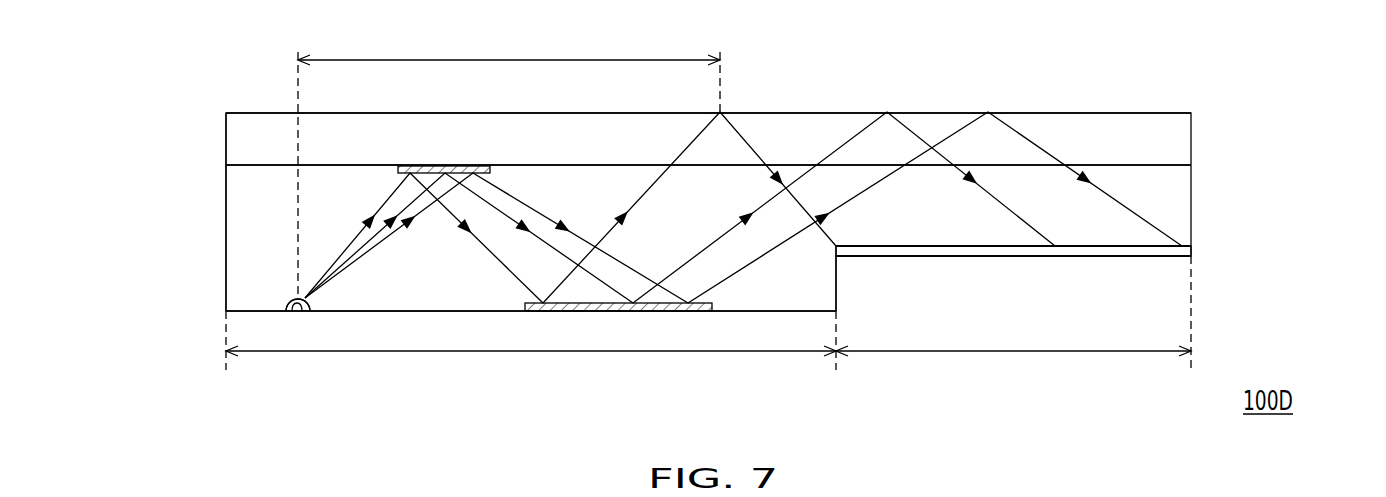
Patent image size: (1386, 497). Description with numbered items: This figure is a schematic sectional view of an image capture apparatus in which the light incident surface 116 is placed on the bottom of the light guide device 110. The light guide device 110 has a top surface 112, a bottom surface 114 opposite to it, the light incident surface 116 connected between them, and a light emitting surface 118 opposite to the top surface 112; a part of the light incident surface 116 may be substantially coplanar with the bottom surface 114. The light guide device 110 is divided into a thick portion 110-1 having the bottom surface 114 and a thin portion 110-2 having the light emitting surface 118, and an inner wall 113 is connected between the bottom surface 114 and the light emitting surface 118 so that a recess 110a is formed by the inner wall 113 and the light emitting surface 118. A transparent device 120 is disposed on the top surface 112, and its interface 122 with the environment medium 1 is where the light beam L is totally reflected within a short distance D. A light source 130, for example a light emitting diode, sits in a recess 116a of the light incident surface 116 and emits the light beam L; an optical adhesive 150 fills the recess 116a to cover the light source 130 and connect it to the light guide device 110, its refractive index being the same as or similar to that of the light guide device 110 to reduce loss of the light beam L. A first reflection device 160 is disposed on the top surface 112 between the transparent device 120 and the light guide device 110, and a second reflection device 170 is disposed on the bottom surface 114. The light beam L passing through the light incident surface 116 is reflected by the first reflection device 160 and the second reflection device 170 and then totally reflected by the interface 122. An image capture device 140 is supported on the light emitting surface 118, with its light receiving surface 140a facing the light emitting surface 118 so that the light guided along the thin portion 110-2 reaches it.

The environment medium 1 is at (216, 58).
The light guide device 110 is at (1180, 209).
The thick portion 110-1 is at (531, 350).
The thin portion 110-2 is at (1013, 323).
The recess 110a is at (962, 267).
The top surface 112 is at (256, 164).
The inner wall 113 is at (838, 273).
The bottom surface 114 is at (470, 312).
The light incident surface 116 is at (255, 312).
The recess 116a is at (290, 312).
The light emitting surface 118 is at (1100, 250).
The transparent device 120 is at (1173, 140).
The interface 122 is at (1151, 101).
The light source 130 is at (298, 312).
The image capture device 140 is at (1185, 251).
The light receiving surface 140a is at (1158, 244).
The optical adhesive 150 is at (308, 312).
The first reflection device 160 is at (441, 166).
The second reflection device 170 is at (608, 312).
The light beam L is at (845, 144).
The distance D is at (509, 164).